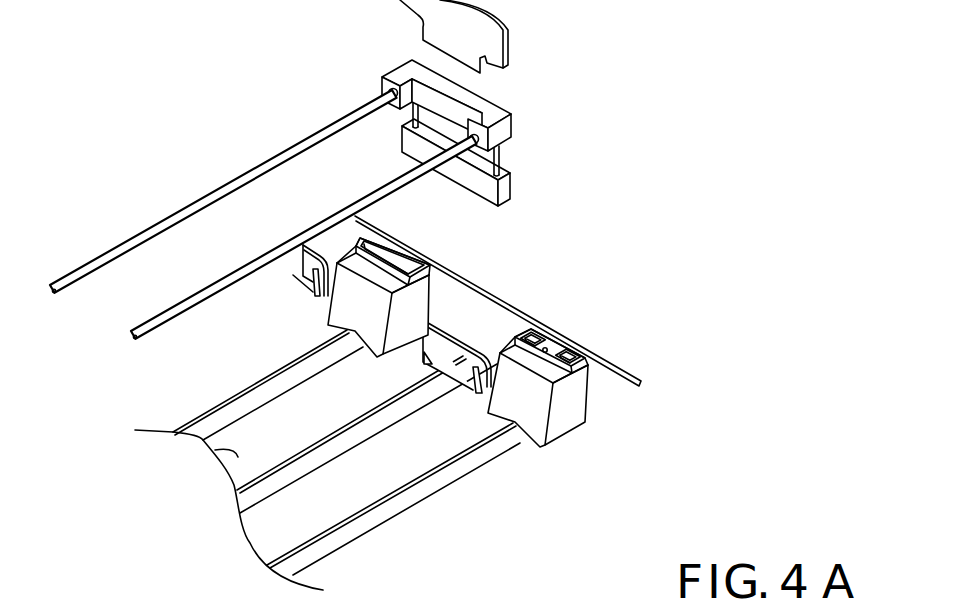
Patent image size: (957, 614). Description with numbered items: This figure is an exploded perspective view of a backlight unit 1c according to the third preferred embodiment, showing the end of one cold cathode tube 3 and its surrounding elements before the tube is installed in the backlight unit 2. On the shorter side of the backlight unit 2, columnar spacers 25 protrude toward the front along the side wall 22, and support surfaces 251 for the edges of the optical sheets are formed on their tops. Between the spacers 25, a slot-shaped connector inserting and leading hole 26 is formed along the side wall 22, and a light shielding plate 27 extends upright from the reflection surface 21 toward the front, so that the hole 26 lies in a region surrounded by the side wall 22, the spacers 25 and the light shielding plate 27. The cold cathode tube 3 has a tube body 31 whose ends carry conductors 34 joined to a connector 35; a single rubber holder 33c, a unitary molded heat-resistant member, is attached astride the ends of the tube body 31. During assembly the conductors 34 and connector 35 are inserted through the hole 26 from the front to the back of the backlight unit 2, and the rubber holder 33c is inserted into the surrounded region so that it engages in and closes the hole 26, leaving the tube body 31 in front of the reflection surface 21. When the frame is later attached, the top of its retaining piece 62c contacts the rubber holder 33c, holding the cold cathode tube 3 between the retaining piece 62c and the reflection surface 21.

The backlight unit 1c is at (703, 500).
The backlight unit 2 is at (488, 504).
The reflection surface 21 is at (213, 452).
The side wall 22 is at (615, 368).
The columnar spacer 25 is at (525, 393).
The support surface 251 is at (533, 367).
The connector inserting and leading hole 26 is at (400, 352).
The light shielding plate 27 is at (462, 338).
The cold cathode tube 3 is at (111, 161).
The tube body 31 is at (222, 183).
The rubber holder 33c is at (498, 112).
The conductor 34 is at (508, 155).
The connector 35 is at (510, 188).
The retaining piece 62c is at (513, 47).